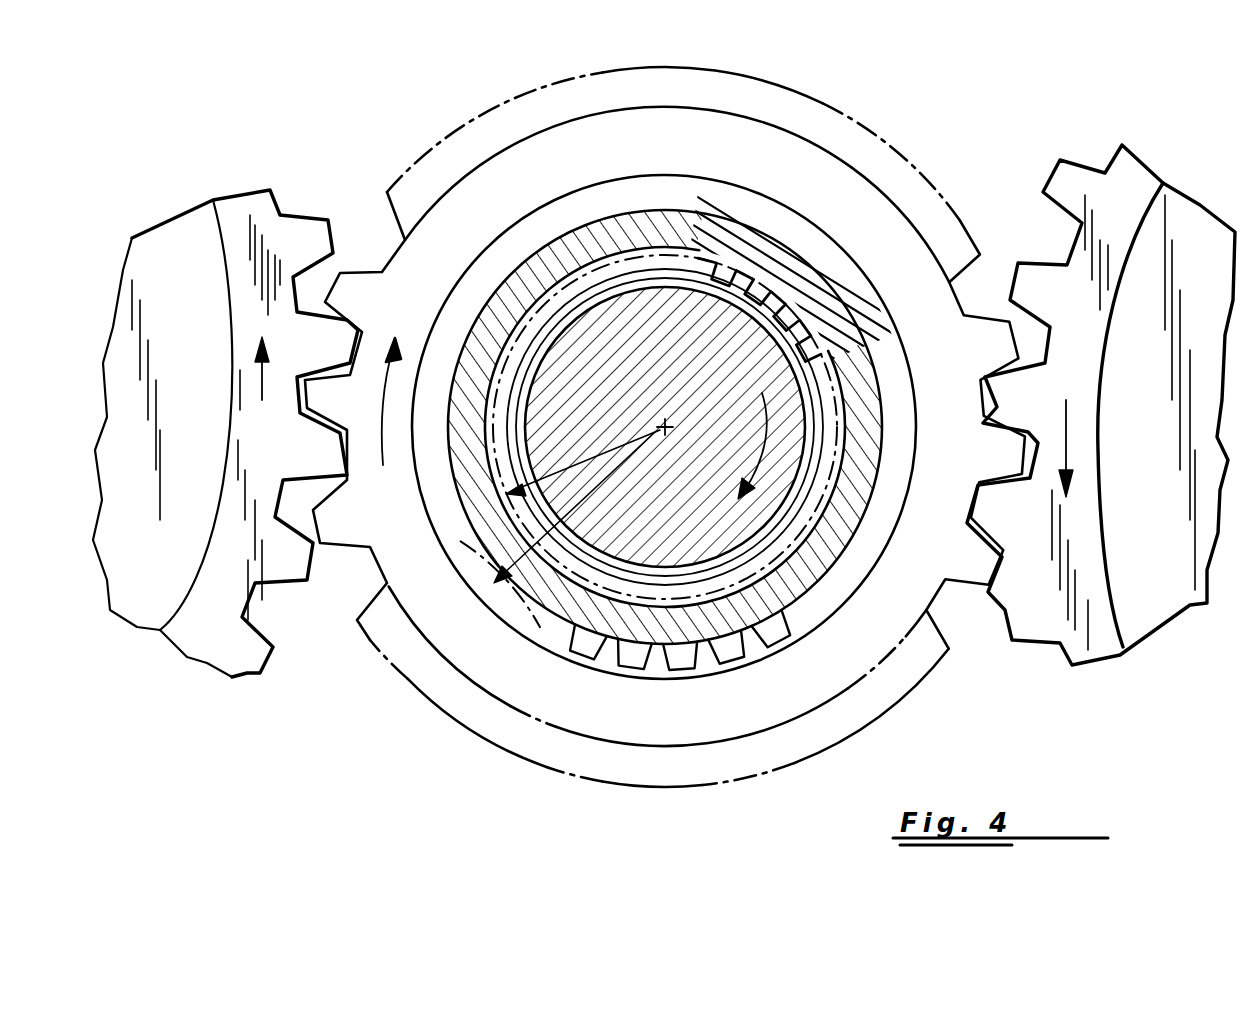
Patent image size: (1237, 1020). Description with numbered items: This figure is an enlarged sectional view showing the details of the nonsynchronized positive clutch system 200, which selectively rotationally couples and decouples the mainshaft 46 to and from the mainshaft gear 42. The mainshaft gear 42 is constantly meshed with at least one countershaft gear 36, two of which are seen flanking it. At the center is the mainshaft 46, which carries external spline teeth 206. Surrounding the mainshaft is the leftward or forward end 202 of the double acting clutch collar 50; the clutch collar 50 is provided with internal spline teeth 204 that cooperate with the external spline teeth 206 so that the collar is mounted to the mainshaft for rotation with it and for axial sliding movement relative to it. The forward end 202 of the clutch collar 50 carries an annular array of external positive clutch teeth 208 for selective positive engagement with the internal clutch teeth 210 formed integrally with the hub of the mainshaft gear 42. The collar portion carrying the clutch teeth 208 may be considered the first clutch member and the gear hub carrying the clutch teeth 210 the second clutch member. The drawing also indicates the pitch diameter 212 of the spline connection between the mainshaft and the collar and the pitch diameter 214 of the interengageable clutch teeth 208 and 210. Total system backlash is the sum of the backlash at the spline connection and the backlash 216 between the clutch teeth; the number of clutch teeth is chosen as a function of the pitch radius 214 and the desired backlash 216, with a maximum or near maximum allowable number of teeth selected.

The positive clutch system 200 is at (832, 96).
The mainshaft gear 42 is at (867, 150).
The countershaft gear 36 is at (250, 207).
The double acting clutch collar 50 is at (880, 542).
The forward end of clutch collar 202 is at (822, 298).
The internal spline teeth 204 is at (762, 296).
The external spline teeth 206 is at (743, 290).
The external positive clutch teeth 208 is at (603, 662).
The internal clutch teeth 210 is at (670, 667).
The desired backlash 216 is at (733, 663).
The pitch diameter of spline connection 212 is at (563, 463).
The pitch diameter of clutch teeth 214 is at (580, 498).
The mainshaft 46 is at (675, 383).